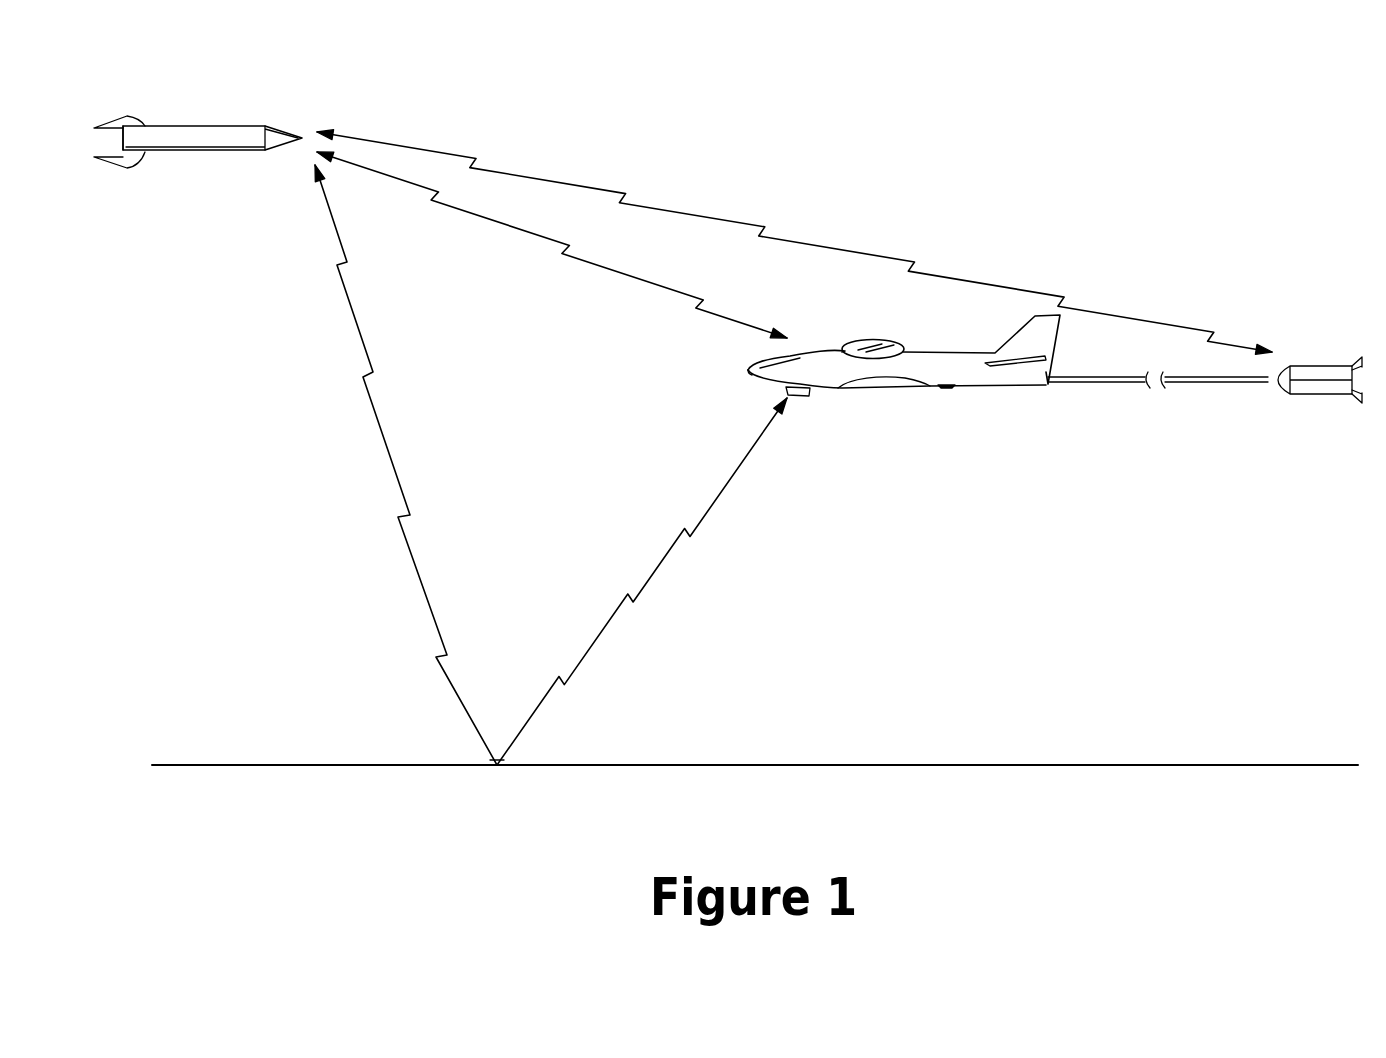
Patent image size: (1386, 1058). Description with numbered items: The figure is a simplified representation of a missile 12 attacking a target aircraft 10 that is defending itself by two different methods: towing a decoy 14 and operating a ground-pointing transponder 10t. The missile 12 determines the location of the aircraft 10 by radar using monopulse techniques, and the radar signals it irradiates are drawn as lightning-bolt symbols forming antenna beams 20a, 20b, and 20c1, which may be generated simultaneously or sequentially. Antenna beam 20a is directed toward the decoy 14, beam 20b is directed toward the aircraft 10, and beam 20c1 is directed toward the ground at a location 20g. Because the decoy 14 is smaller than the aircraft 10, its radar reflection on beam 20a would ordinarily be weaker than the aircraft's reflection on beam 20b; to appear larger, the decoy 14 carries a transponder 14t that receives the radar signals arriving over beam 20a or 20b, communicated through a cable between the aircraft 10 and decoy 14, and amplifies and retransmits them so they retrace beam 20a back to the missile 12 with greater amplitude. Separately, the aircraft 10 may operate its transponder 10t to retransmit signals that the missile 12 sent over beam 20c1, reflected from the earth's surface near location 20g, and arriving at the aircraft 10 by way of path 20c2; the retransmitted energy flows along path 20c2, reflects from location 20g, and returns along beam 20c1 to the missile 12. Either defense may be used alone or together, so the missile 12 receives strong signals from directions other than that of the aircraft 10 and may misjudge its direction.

The aircraft 10 is at (913, 392).
The ground-pointing transponder 10t is at (797, 398).
The missile 12 is at (199, 128).
The decoy 14 is at (1320, 373).
The transponder 14t is at (1283, 388).
The antenna beam 20a is at (715, 217).
The antenna beam 20b is at (613, 277).
The antenna beam 20c1 is at (380, 430).
The path 20c2 is at (668, 550).
The location 20g is at (497, 767).